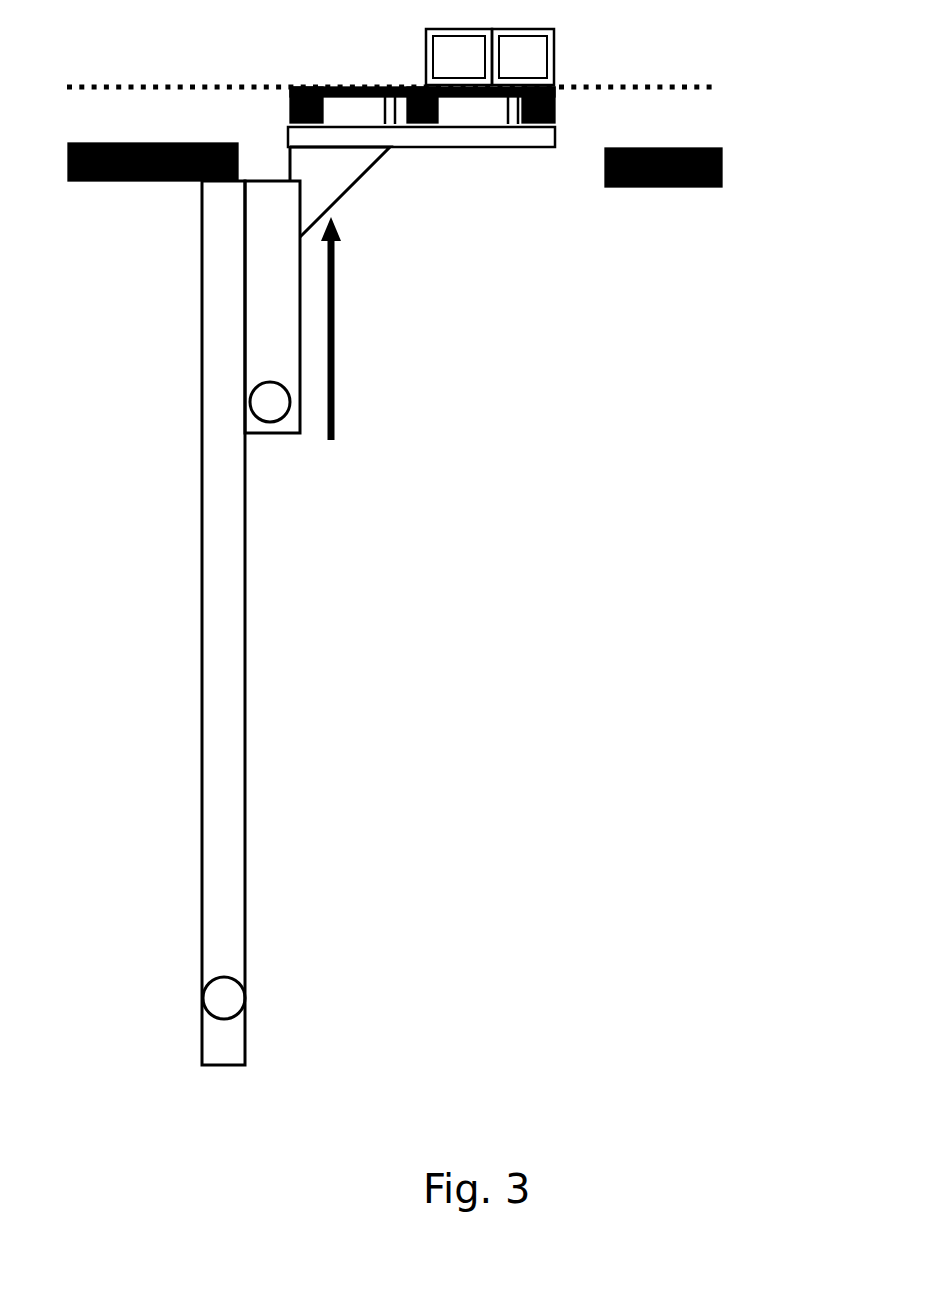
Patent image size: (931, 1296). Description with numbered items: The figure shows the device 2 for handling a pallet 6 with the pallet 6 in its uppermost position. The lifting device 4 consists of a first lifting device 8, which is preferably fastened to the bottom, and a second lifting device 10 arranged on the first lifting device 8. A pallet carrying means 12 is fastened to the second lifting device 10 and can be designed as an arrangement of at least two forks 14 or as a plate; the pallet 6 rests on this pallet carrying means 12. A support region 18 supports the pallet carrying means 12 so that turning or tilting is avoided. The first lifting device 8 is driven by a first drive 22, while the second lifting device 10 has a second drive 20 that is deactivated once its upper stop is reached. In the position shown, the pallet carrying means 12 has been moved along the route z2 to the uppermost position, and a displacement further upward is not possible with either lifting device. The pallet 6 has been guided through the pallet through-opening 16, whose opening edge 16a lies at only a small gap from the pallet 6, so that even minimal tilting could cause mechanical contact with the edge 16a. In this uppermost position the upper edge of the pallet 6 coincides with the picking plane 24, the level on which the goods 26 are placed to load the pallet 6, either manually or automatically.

The device 2 is at (733, 337).
The lifting device 4 is at (170, 452).
The pallet 6 is at (290, 107).
The first lifting device 8 is at (213, 607).
The second lifting device 10 is at (283, 276).
The pallet carrying means 12 is at (400, 170).
The forks 14 is at (514, 137).
The pallet through-opening 16 is at (562, 166).
The opening edge 16a is at (603, 167).
The support region 18 is at (338, 177).
The second drive 20 is at (222, 976).
The first drive 22 is at (268, 381).
The picking plane 24 is at (713, 88).
The goods 26 is at (534, 57).